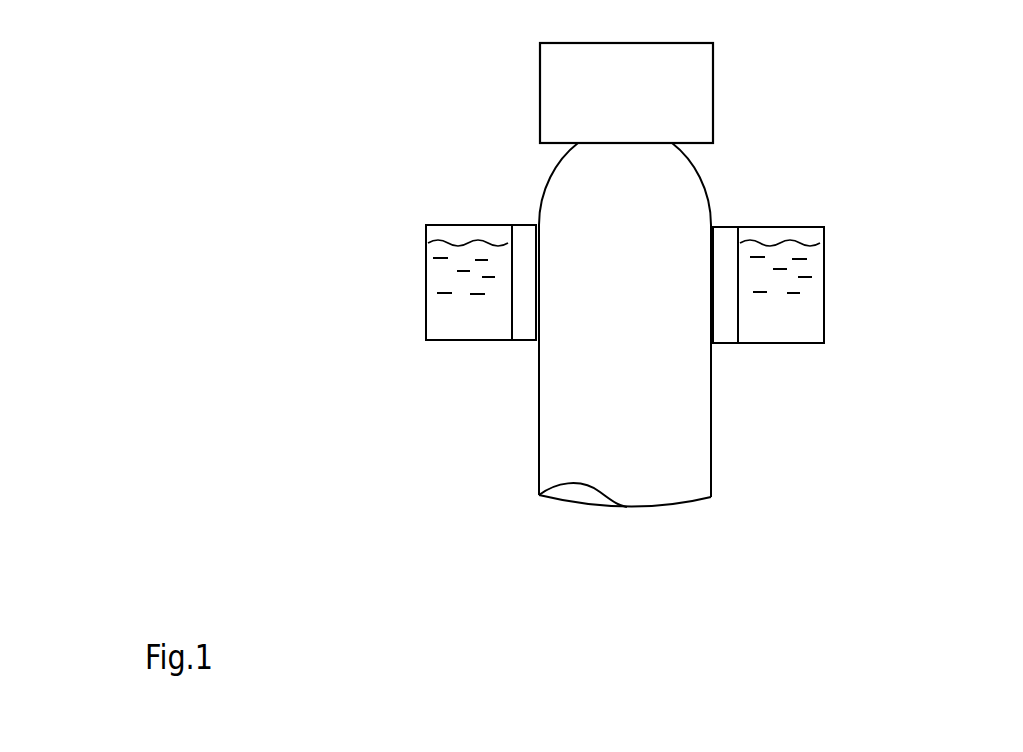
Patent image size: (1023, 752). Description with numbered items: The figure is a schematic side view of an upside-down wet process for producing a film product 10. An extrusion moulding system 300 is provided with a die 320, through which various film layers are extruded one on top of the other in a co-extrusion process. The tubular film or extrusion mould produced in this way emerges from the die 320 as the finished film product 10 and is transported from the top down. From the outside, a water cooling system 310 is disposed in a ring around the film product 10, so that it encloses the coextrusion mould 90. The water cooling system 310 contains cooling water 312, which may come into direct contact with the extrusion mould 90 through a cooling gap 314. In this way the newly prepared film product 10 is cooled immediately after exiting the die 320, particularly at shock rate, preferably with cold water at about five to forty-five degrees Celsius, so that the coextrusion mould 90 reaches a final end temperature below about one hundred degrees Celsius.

The extrusion moulding system 300 is at (830, 160).
The die 320 is at (578, 143).
The film product 10 is at (714, 428).
The coextrusion mould 90 is at (539, 418).
The water cooling system 310 is at (825, 250).
The cooling water 312 is at (815, 320).
The cooling gap 314 is at (725, 238).